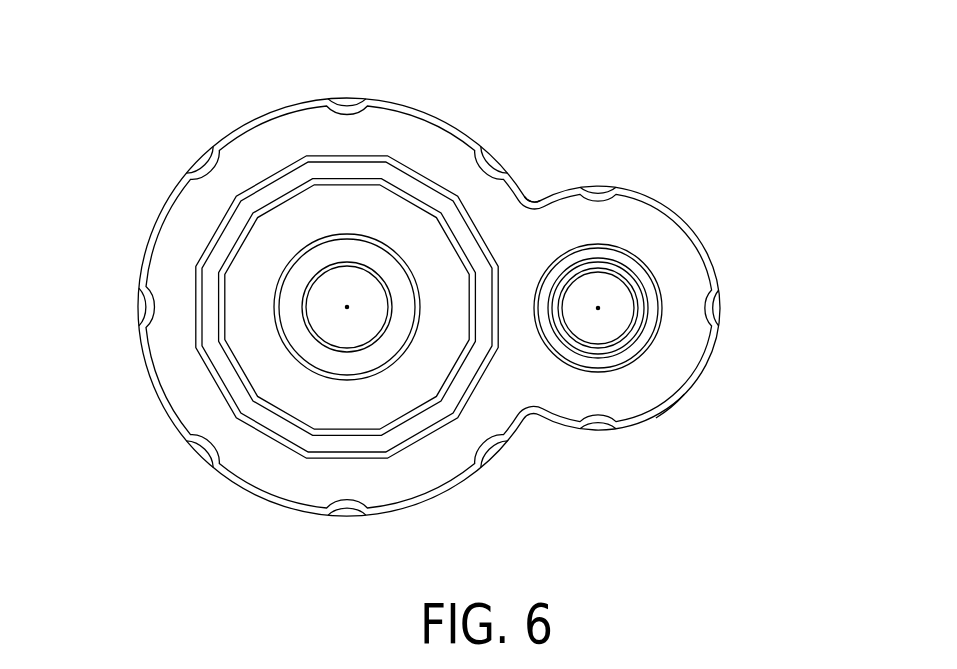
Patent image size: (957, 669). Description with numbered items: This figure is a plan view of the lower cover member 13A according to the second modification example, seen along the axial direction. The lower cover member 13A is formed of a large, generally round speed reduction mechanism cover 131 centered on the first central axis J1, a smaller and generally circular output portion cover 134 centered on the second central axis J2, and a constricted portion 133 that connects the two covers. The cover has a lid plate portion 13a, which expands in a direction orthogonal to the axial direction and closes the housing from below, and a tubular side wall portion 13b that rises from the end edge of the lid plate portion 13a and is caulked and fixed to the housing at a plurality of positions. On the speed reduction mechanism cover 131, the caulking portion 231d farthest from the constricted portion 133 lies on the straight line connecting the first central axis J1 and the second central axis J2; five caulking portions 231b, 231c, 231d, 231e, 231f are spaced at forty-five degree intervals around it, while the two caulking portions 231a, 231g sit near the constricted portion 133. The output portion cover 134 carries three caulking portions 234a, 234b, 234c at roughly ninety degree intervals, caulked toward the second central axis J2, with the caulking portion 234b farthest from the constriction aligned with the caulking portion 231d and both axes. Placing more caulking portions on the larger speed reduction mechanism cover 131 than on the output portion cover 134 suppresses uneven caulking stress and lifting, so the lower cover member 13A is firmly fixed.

The lower cover member 13A is at (600, 123).
The speed reduction mechanism cover 131 is at (255, 118).
The constricted portion 133 is at (538, 196).
The output portion cover 134 is at (684, 212).
The lid plate portion 13a is at (697, 345).
The side wall portion 13b is at (685, 398).
The caulking portion 231a is at (490, 162).
The caulking portion 231b is at (348, 103).
The caulking portion 231c is at (207, 163).
The caulking portion 231d is at (147, 307).
The caulking portion 231e is at (210, 450).
The caulking portion 231f is at (347, 513).
The caulking portion 231g is at (492, 450).
The caulking portion 234a is at (603, 190).
The caulking portion 234b is at (716, 307).
The caulking portion 234c is at (600, 430).
The first central axis J1 is at (347, 307).
The second central axis J2 is at (598, 308).